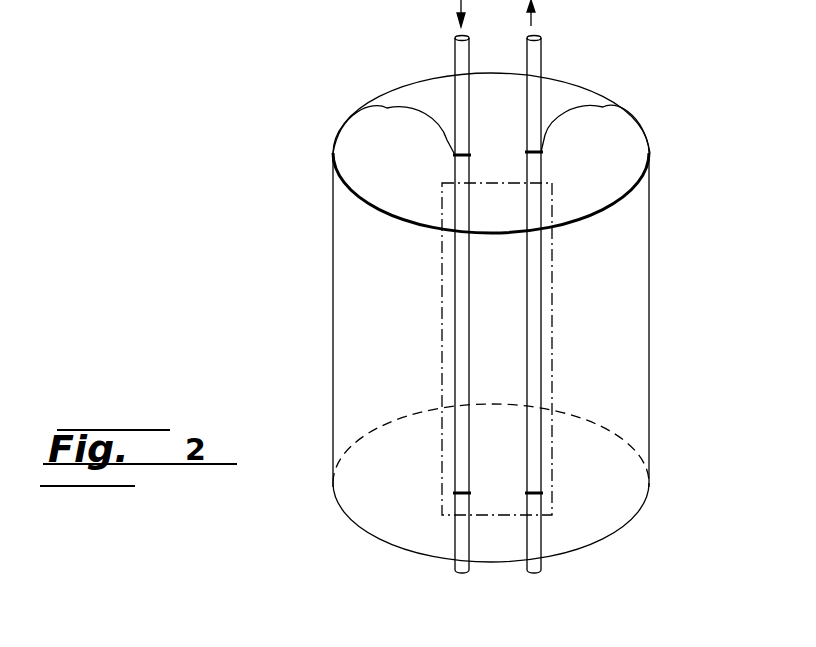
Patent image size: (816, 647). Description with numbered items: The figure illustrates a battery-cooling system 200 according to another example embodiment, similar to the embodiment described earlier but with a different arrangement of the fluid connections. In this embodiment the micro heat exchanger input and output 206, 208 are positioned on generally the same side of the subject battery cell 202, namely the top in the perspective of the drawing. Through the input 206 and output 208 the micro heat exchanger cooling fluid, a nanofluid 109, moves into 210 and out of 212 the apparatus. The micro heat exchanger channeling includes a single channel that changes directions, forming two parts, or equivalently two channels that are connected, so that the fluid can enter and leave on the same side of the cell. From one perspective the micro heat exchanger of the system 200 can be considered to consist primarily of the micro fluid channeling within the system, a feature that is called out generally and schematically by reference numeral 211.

The battery-cooling system 200 is at (243, 272).
The battery cell 202 is at (417, 495).
The micro heat exchanger input 206 is at (453, 73).
The micro heat exchanger output 208 is at (541, 150).
The movement of cooling fluid into the apparatus 210 is at (451, 16).
The movement of cooling fluid out of the apparatus 212 is at (540, 17).
The nanofluid 109 is at (460, 352).
The micro fluid channeling feature 211 is at (443, 383).